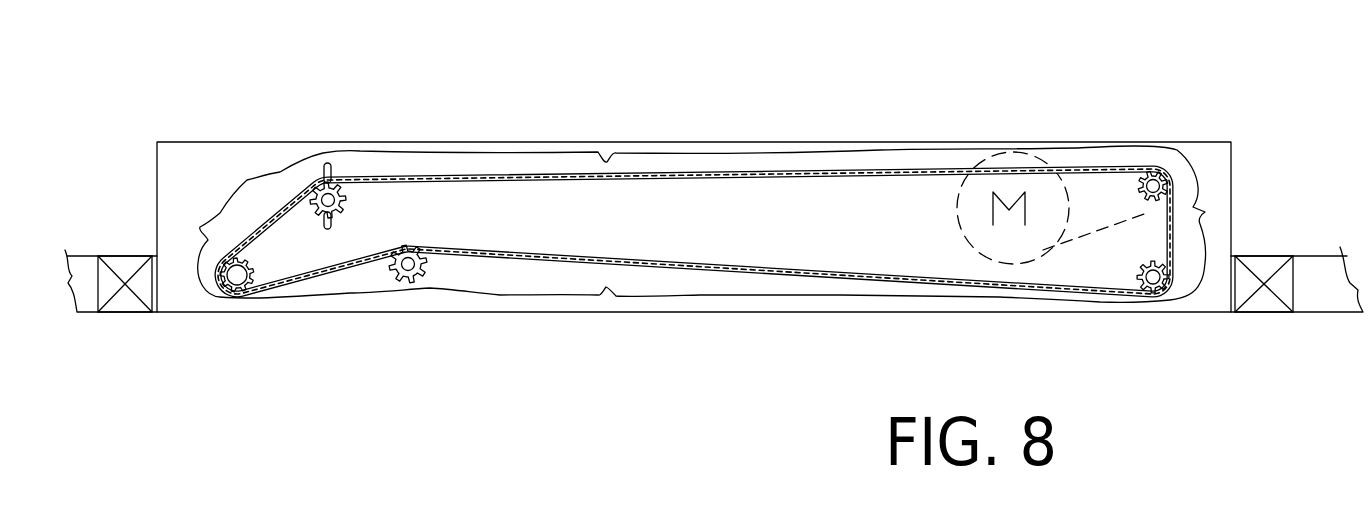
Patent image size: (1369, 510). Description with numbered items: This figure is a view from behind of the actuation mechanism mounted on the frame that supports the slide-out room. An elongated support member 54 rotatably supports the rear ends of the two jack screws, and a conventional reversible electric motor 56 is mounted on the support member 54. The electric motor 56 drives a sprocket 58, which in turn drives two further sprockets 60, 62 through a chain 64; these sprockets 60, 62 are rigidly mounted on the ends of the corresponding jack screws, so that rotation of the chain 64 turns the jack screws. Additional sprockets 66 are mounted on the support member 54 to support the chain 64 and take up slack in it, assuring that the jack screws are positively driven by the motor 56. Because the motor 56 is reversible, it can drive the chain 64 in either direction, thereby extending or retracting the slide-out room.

The elongated support member 54 is at (1217, 173).
The reversible electric motor 56 is at (995, 148).
The sprocket 58 is at (1147, 177).
The sprocket 60 is at (1137, 288).
The sprocket 62 is at (250, 283).
The chain 64 is at (862, 278).
The additional sprockets 66 is at (343, 196).